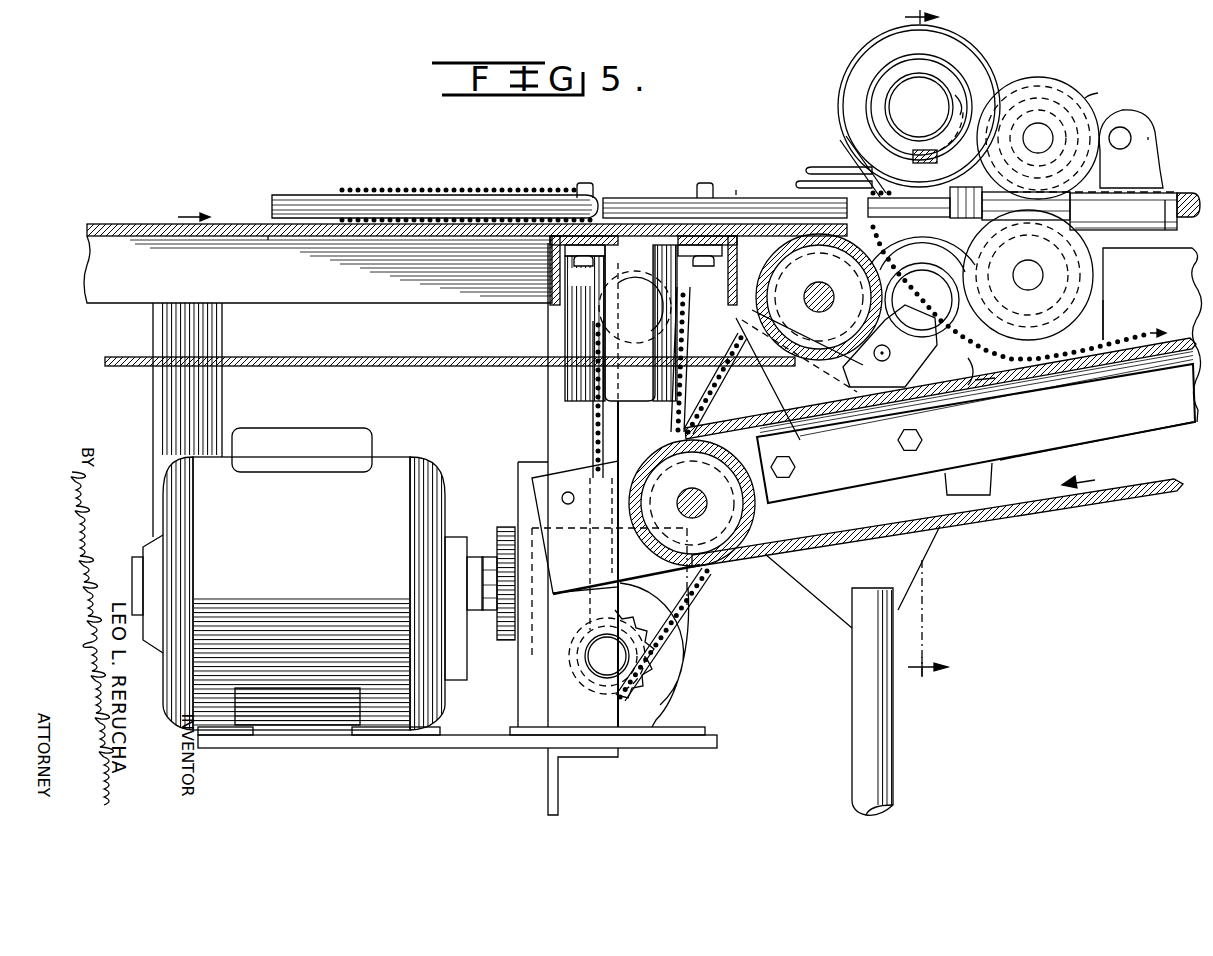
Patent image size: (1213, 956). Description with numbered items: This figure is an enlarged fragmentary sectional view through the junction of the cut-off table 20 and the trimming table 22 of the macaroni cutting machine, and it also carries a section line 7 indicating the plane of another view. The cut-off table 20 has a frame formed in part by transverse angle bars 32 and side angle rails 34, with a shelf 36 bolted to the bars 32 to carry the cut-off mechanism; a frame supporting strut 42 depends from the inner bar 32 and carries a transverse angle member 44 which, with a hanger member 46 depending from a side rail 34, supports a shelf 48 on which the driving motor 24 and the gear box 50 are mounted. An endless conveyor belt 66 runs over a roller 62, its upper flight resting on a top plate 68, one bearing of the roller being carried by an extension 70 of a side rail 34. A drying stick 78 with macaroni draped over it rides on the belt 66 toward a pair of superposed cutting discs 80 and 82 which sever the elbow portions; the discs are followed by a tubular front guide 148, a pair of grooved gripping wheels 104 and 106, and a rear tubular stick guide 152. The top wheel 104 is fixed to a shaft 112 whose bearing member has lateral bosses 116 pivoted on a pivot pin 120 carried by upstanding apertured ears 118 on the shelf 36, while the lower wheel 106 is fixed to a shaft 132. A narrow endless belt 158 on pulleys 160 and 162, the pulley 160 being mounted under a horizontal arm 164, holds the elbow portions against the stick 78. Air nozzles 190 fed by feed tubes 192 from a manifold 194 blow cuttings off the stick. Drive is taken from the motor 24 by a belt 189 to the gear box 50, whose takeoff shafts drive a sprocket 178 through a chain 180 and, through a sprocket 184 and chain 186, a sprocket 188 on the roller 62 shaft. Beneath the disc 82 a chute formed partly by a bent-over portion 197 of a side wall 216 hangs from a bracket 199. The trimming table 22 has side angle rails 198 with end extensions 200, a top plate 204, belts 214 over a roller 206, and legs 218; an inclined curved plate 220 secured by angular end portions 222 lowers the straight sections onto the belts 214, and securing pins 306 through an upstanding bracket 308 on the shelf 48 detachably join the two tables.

The section line 7- 7 is at (915, 355).
The cut-off table 20 is at (240, 190).
The trimming table 22 is at (1141, 512).
The driving motor 24 is at (400, 457).
The transverse angle bars 32 is at (548, 292).
The side angle rails 34 is at (386, 305).
The shelf 36 is at (736, 180).
The frame supporting strut 42 is at (546, 411).
The transverse angle member 44 is at (548, 786).
The hanger member 46 is at (223, 406).
The shelf 48 is at (441, 748).
The gear box 50 is at (680, 690).
The roller 62 is at (775, 258).
The endless conveyor belt 66 is at (141, 223).
The top plate 68 is at (270, 237).
The extension 70 is at (643, 323).
The drying stick 78 is at (293, 197).
The cutting disc 80 is at (838, 88).
The cutting disc 82 is at (983, 360).
The wheel 104 is at (1097, 177).
The wheel 106 is at (1098, 284).
The shaft 112 is at (1044, 147).
The lateral bosses 116 is at (1110, 117).
The upstanding apertured ears 118 is at (1150, 138).
The pivot pin 120 is at (1128, 145).
The shaft 132 is at (1023, 284).
The tubular front guide 148 is at (962, 232).
The rear tubular stick guide 152 is at (1165, 202).
The narrow endless belt 158 is at (688, 200).
The pulley 160 is at (847, 183).
The pulley 162 is at (605, 197).
The horizontal arm 164 is at (840, 172).
The sprocket 178 is at (615, 339).
The chain 180 is at (590, 380).
The sprocket 184 is at (652, 650).
The chain 186 is at (706, 583).
The sprocket 188 is at (745, 323).
The belt 189 is at (506, 642).
The air nozzles 190 is at (838, 158).
The feed tubes 192 is at (941, 103).
The manifold 194 is at (935, 122).
The bent-over portion 197 is at (990, 480).
The side angle rails 198 is at (1080, 425).
The bracket 199 is at (747, 388).
The end extensions 200 is at (835, 522).
The top plate 204 is at (940, 420).
The roller 206 is at (757, 523).
The belts 214 is at (1063, 505).
The side wall 216 is at (1175, 276).
The legs 218 is at (893, 720).
The inclined curved plate 220 is at (937, 332).
The angular end portions 222 is at (965, 374).
The securing pins 306 is at (562, 497).
The upstanding bracket 308 is at (518, 690).